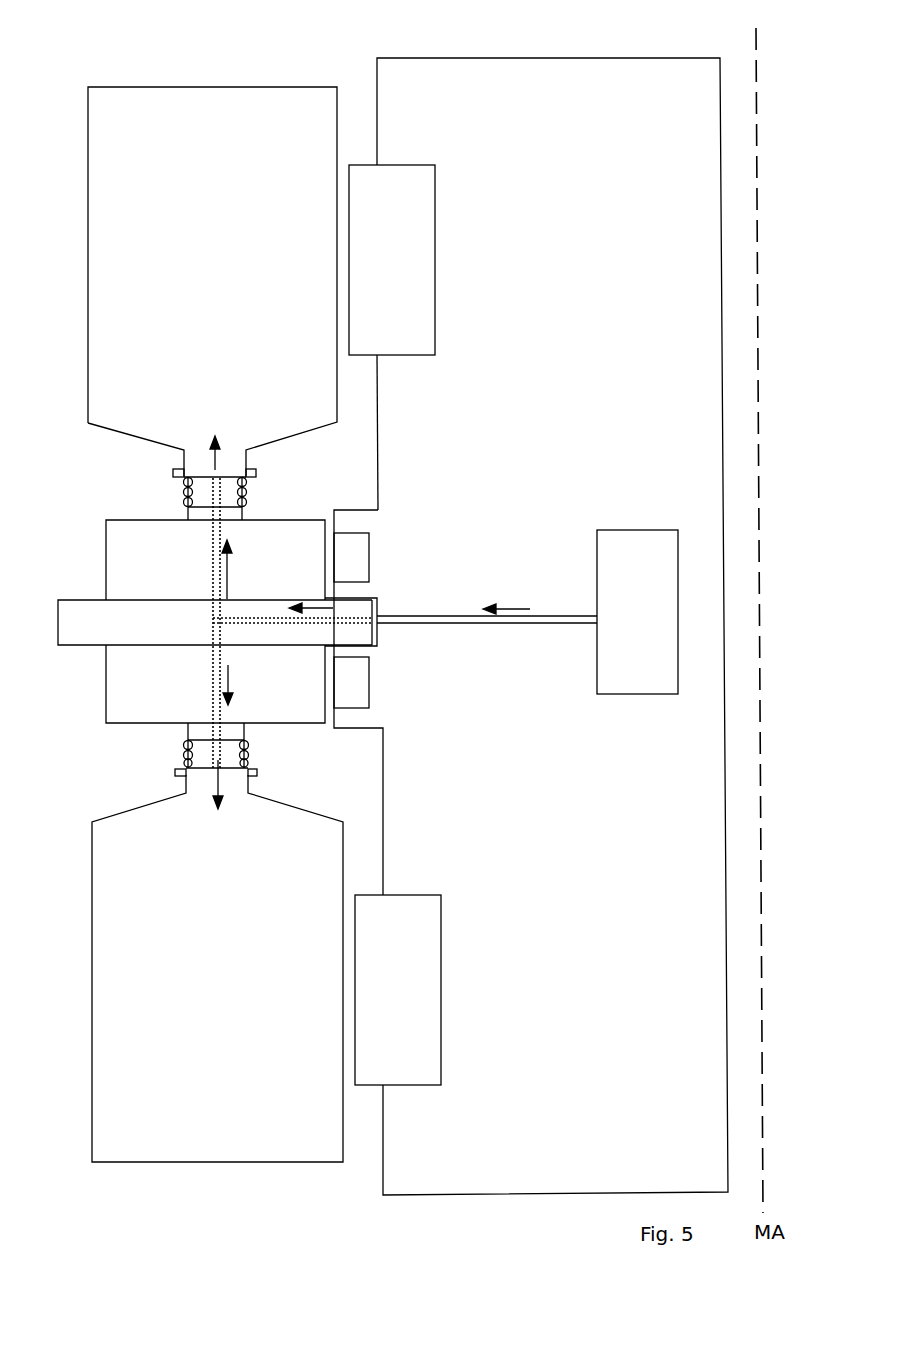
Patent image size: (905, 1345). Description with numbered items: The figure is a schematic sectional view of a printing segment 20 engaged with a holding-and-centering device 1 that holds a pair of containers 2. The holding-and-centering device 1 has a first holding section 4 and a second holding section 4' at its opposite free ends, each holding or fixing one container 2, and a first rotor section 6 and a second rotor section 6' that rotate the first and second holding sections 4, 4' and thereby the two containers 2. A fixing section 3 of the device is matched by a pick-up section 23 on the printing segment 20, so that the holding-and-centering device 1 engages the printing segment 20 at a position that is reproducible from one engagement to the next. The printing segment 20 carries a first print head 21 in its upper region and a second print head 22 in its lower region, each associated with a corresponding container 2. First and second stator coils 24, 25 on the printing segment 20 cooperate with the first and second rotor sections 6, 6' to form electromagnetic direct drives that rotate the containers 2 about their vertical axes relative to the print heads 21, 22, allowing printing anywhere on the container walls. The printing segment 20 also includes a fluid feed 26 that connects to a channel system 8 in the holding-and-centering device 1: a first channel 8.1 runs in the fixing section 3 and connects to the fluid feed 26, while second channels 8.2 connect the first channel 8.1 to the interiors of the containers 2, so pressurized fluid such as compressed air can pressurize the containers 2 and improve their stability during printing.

The holding-and-centering device 1 is at (222, 602).
The container 2 is at (190, 604).
The fixing section 3 is at (192, 611).
The first holding section 4 is at (189, 745).
The second holding section 4' is at (251, 498).
The first rotor section 6 is at (186, 640).
The second rotor section 6' is at (183, 556).
The channel system 8 is at (251, 623).
The first channel 8.1 is at (292, 596).
The second channel 8.2 is at (175, 623).
The printing segment 20 is at (531, 602).
The first print head 21 is at (423, 260).
The second print head 22 is at (429, 990).
The pick-up section 23 is at (378, 601).
The first stator coil 24 is at (383, 542).
The second stator coil 25 is at (383, 676).
The fluid feed 26 is at (527, 610).